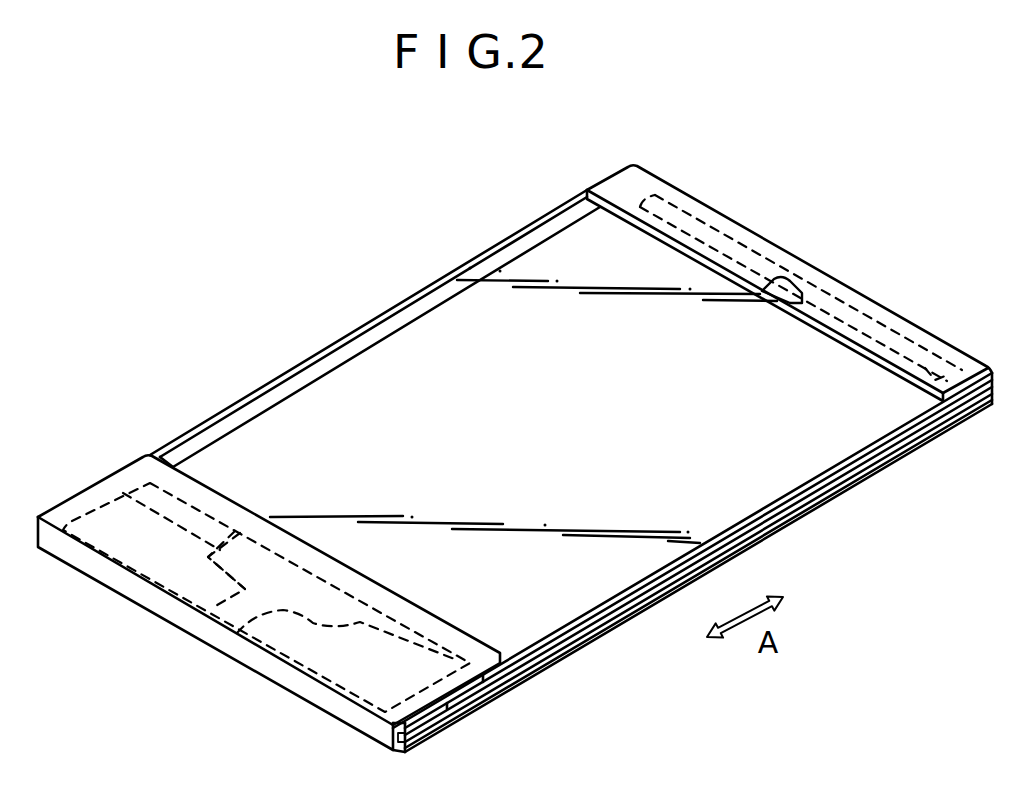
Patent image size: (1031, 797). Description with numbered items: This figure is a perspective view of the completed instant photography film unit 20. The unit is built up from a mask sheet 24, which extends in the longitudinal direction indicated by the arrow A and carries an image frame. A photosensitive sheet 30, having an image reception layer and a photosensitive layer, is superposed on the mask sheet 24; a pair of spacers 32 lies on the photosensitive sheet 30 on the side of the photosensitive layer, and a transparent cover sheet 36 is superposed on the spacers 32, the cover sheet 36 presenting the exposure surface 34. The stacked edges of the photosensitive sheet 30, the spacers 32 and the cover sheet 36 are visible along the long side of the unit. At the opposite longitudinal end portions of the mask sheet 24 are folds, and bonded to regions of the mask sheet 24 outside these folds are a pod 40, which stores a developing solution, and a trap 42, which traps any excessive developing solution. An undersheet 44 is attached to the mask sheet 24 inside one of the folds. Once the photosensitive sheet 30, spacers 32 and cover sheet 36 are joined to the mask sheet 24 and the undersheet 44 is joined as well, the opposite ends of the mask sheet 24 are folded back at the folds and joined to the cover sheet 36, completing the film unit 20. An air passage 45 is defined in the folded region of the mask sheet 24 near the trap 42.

The instant photography film unit 20 is at (515, 419).
The mask sheet 24 is at (269, 607).
The photosensitive sheet 30 is at (804, 513).
The spacers 32 is at (523, 673).
The exposure surface 34 is at (285, 415).
The cover sheet 36 is at (445, 345).
The pod 40 is at (170, 573).
The trap 42 is at (789, 282).
The undersheet 44 is at (250, 563).
The air passage 45 is at (778, 306).